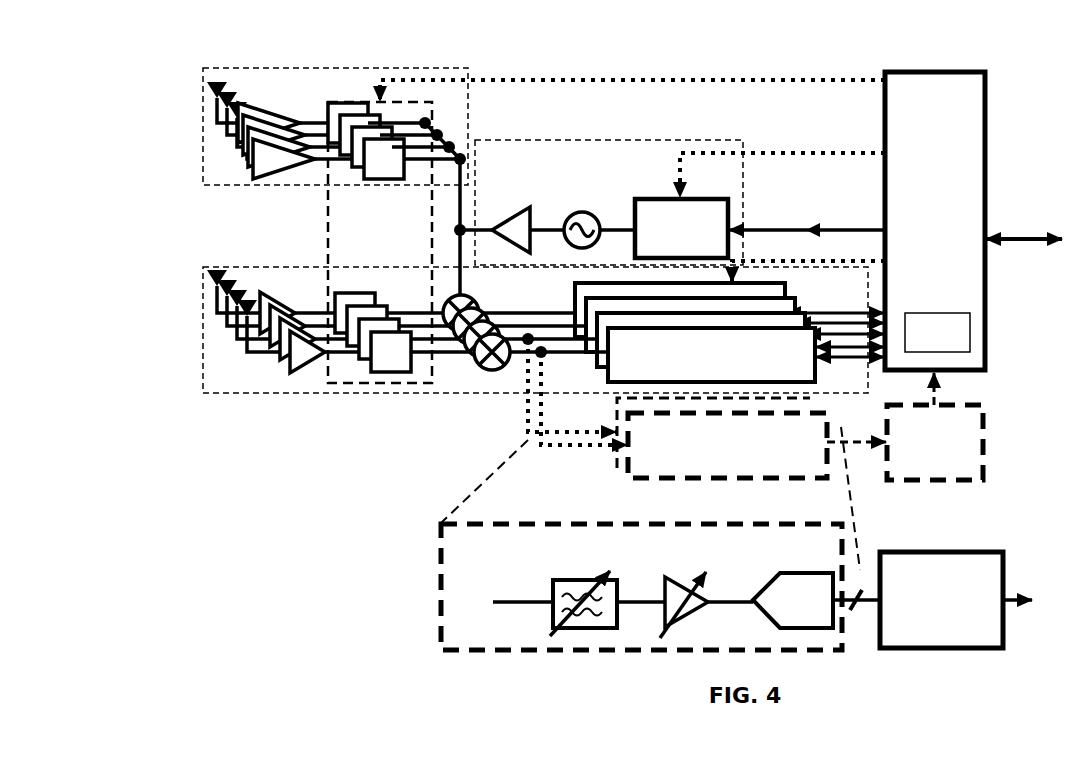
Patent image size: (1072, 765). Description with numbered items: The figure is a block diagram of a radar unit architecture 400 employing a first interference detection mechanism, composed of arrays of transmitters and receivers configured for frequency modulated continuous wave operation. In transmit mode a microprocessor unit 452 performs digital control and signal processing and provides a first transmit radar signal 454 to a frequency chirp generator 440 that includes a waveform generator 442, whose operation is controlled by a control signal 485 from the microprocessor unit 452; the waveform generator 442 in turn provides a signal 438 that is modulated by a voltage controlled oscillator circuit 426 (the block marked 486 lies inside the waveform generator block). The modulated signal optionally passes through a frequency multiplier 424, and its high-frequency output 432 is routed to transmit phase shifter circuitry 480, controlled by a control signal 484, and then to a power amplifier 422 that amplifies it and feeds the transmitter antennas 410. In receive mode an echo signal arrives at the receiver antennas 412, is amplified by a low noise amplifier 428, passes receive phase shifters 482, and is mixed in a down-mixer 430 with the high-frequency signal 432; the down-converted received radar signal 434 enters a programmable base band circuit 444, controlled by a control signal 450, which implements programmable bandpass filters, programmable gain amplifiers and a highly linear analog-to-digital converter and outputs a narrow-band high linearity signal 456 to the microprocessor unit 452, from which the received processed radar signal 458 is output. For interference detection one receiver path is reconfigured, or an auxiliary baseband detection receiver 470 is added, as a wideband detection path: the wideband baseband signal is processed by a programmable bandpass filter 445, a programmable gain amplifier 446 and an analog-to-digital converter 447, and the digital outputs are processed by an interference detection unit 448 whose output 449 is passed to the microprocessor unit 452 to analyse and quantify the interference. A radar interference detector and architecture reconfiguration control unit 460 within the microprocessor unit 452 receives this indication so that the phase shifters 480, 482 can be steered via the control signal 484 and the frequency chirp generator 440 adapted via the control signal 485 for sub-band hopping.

The radar unit architecture 400 is at (132, 133).
The transmitter antennas 410 is at (233, 80).
The receiver antennas 412 is at (233, 267).
The power amplifier 422 is at (293, 168).
The frequency multiplier 424 is at (537, 236).
The voltage controlled oscillator circuit 426 is at (590, 212).
The low noise amplifier 428 is at (302, 307).
The down-mixer 430 is at (453, 298).
The high-frequency output 432 is at (448, 226).
The down-converted received radar signal 434 is at (572, 352).
The waveform generator signal 438 is at (612, 234).
The frequency chirp generator 440 is at (668, 140).
The waveform generator 442 is at (674, 212).
The programmable base band circuit 444 is at (820, 382).
The programmable bandpass filter 445 is at (578, 629).
The programmable gain amplifier 446 is at (660, 620).
The analog-to-digital converter 447 is at (820, 627).
The interference detection unit 448 is at (985, 466).
The interference detection unit output 449 is at (945, 385).
The control signal 450 is at (818, 261).
The microprocessor unit 452 is at (927, 191).
The first transmit radar signal 454 is at (866, 226).
The narrow-band high linearity signal 456 is at (868, 313).
The received processed radar signal 458 is at (1004, 248).
The radar interference detector and architecture reconfiguration control unit 460 is at (937, 332).
The auxiliary baseband detection receiver 470 is at (612, 450).
The transmit phase shifter circuitry 480 is at (347, 99).
The receive phase shifters 482 is at (372, 292).
The control signal 484 is at (752, 79).
The control signal 485 is at (815, 153).
The control register 486 is at (650, 186).